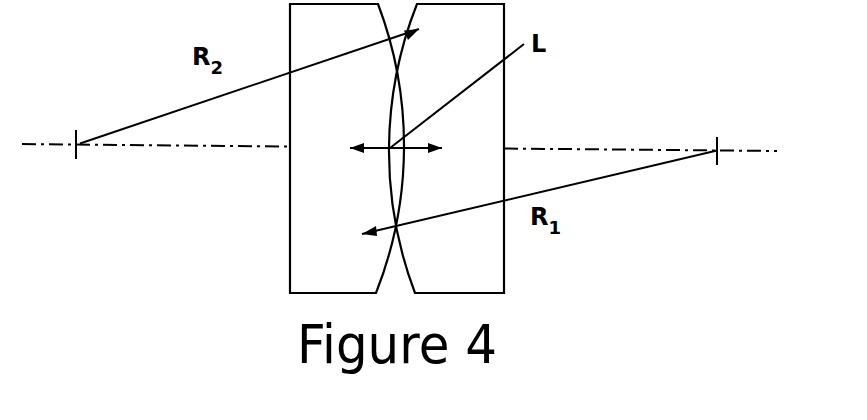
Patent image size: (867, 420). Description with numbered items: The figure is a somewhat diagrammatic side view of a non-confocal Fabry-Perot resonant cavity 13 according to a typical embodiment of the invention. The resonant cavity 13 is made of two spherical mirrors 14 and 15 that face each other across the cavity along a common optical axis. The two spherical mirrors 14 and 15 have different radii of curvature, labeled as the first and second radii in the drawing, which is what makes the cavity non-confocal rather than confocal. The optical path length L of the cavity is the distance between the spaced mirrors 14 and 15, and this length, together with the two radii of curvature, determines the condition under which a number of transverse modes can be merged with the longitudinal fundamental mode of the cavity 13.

The non-confocal resonant cavity 13 is at (418, 181).
The spherical mirror 14 is at (353, 201).
The spherical mirror 15 is at (433, 238).